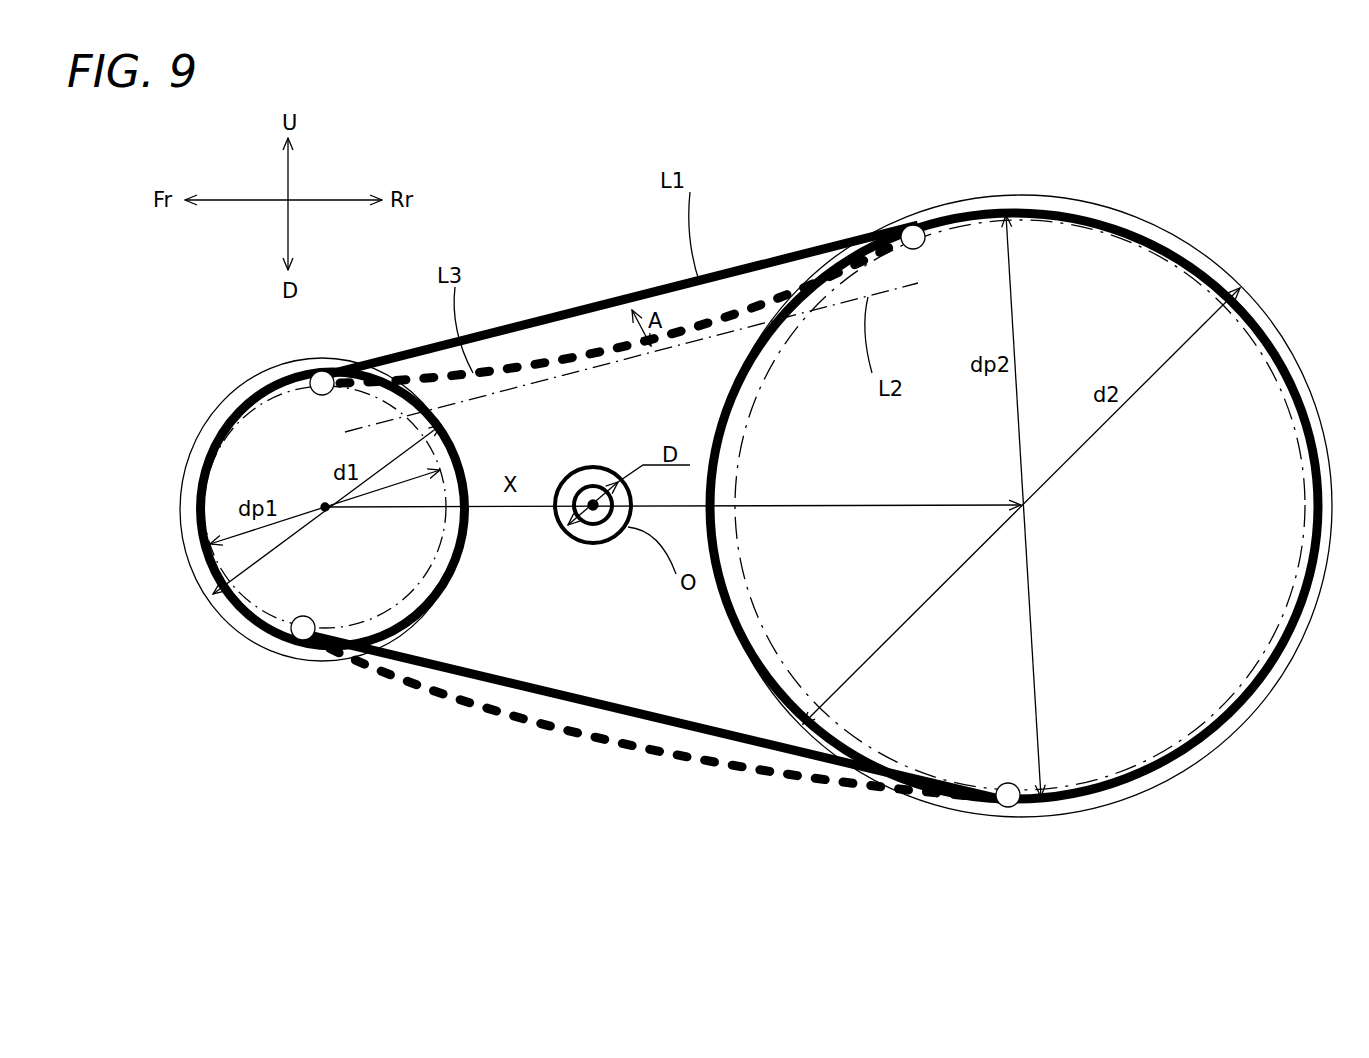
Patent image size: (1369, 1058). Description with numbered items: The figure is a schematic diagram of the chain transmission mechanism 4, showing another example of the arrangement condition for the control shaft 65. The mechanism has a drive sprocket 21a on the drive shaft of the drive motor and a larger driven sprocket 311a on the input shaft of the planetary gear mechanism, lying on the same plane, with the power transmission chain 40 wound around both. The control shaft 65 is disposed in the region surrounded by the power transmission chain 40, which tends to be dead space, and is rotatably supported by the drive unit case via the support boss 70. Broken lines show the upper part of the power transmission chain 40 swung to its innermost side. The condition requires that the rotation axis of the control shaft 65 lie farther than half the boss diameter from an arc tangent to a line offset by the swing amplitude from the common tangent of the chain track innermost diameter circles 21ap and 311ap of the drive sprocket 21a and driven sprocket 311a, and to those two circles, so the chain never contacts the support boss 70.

The chain transmission mechanism 4 is at (1097, 172).
The drive sprocket 21a is at (262, 648).
The chain track innermost diameter circle of the drive sprocket 21ap is at (437, 535).
The driven sprocket 311a is at (1075, 820).
The chain track innermost diameter circle of the driven sprocket 311ap is at (760, 380).
The power transmission chain 40 is at (680, 757).
The control shaft 65 is at (590, 537).
The support boss 70 is at (572, 533).